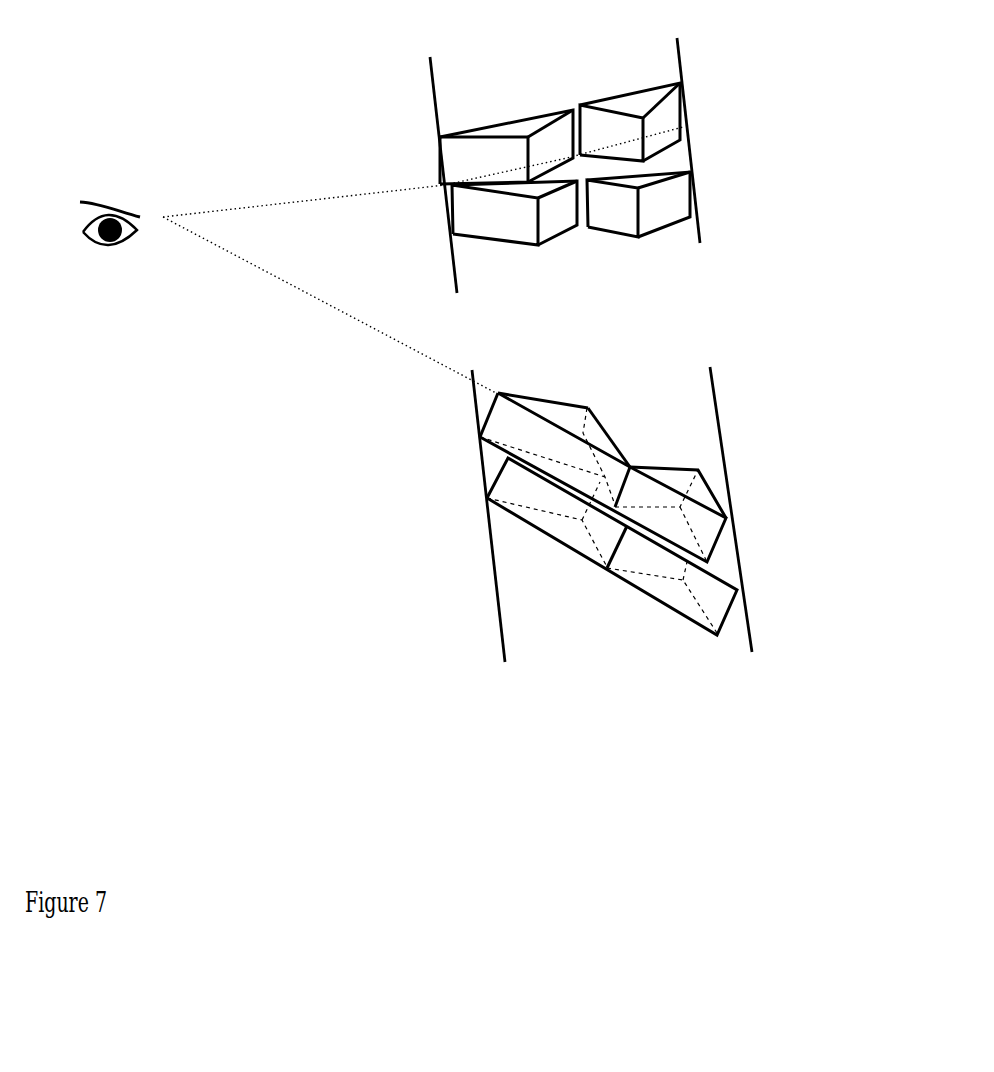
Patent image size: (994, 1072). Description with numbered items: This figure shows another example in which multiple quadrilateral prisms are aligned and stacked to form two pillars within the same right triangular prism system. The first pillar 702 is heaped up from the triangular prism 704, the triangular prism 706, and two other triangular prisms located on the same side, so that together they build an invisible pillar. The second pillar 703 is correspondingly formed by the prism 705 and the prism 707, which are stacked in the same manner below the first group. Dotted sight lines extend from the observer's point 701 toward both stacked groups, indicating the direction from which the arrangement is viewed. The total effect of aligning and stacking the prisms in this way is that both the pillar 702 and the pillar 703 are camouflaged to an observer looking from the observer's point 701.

The observer's point 701 is at (120, 250).
The pillar 702 is at (497, 103).
The pillar 703 is at (527, 587).
The triangular prism 704 is at (665, 125).
The prism 705 is at (522, 432).
The triangular prism 706 is at (653, 207).
The prism 707 is at (712, 578).